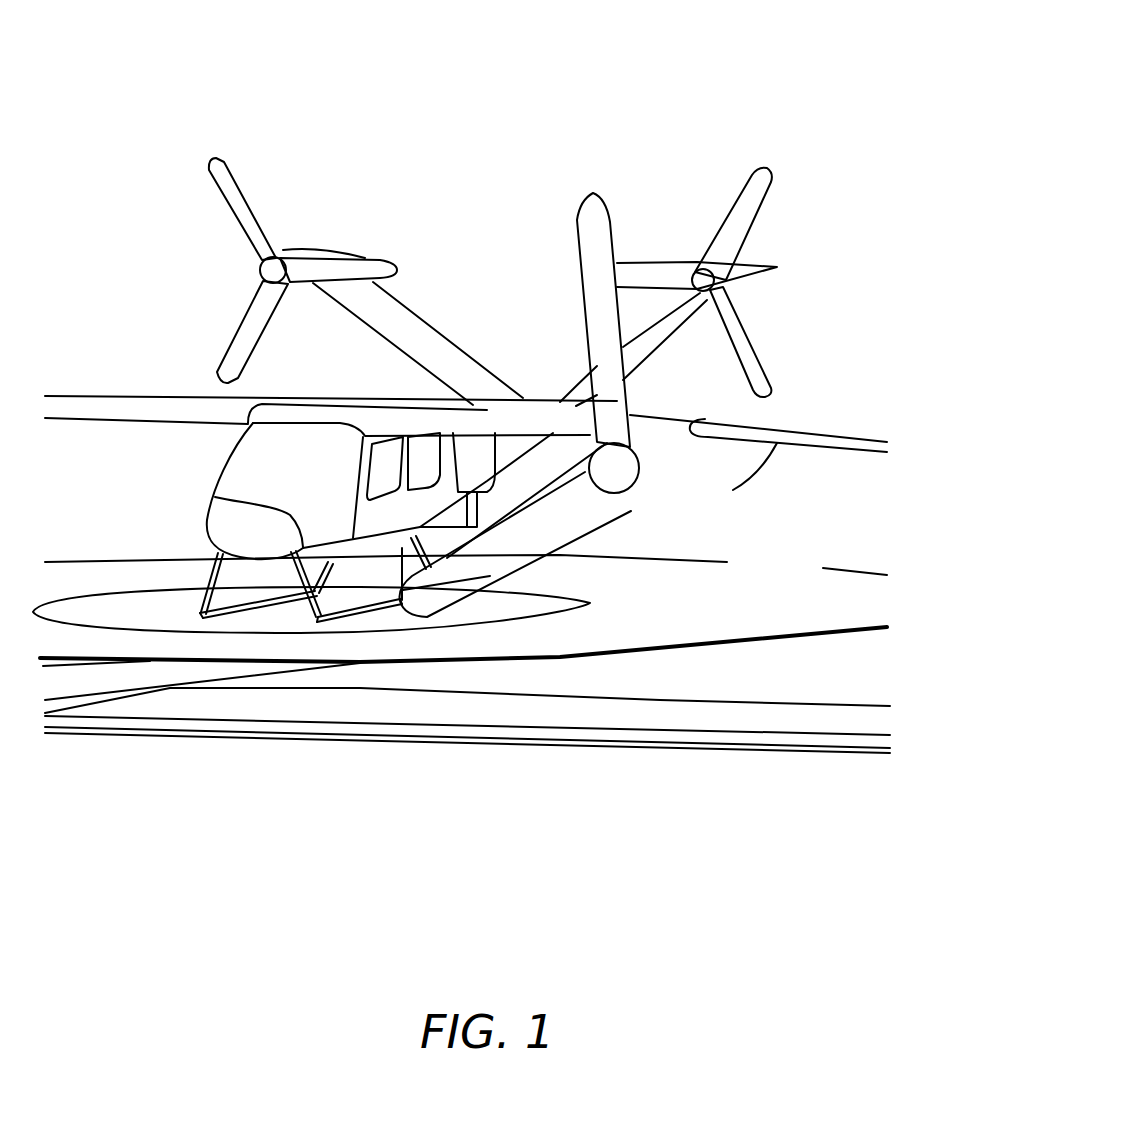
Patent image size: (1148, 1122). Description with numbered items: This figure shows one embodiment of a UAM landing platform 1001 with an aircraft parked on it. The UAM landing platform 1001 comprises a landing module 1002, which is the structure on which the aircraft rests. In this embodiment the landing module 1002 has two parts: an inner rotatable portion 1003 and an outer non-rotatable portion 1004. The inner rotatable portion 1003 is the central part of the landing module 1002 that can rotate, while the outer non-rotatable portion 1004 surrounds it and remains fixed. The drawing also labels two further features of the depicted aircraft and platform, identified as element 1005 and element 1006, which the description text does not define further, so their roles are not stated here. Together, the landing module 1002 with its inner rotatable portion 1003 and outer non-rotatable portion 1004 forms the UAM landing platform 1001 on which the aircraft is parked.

The UAM landing platform 1001 is at (738, 88).
The landing module 1002 is at (888, 553).
The inner rotatable portion 1003 is at (80, 628).
The outer non-rotatable portion 1004 is at (160, 663).
The wing 1005 is at (130, 395).
The landing gear 1006 is at (390, 612).